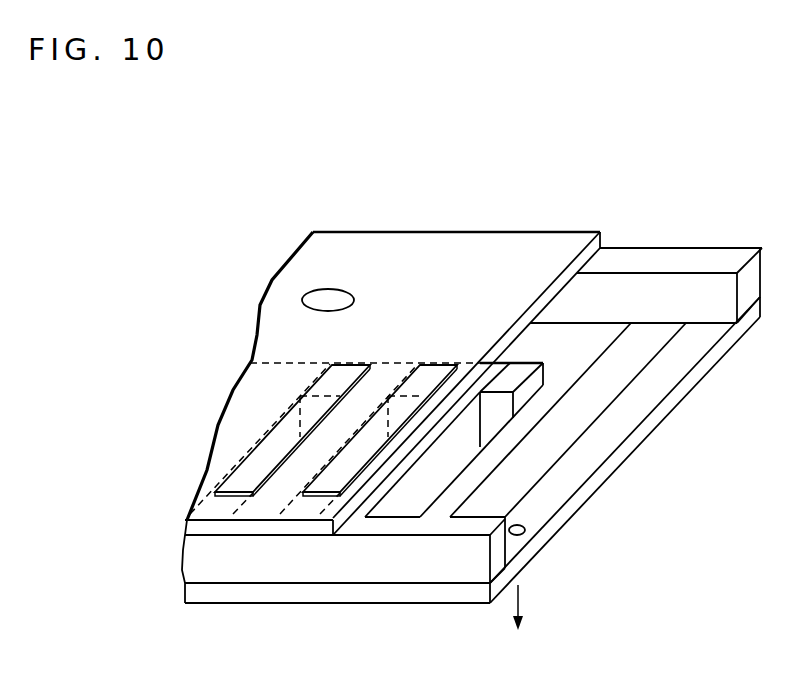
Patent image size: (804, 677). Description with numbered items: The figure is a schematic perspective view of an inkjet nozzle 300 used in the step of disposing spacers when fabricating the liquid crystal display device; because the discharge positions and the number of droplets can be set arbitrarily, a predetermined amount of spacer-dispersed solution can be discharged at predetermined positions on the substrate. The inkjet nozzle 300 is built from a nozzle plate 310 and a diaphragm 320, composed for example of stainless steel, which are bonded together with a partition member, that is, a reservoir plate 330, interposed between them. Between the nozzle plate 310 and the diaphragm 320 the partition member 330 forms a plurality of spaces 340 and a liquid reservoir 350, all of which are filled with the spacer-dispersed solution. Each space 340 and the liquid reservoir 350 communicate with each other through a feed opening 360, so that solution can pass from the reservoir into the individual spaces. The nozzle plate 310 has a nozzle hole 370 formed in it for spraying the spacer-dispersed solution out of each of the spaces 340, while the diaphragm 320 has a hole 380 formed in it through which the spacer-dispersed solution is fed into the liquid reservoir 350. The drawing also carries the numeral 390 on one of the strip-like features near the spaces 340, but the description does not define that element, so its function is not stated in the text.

The inkjet nozzle 300 is at (400, 212).
The nozzle plate 310 is at (683, 383).
The diaphragm 320 is at (350, 513).
The partition member 330 is at (533, 467).
The spaces 340 is at (457, 427).
The liquid reservoir 350 is at (666, 330).
The feed opening 360 is at (530, 382).
The nozzle hole 370 is at (526, 528).
The hole 380 is at (313, 298).
The electrode strip 390 is at (259, 462).